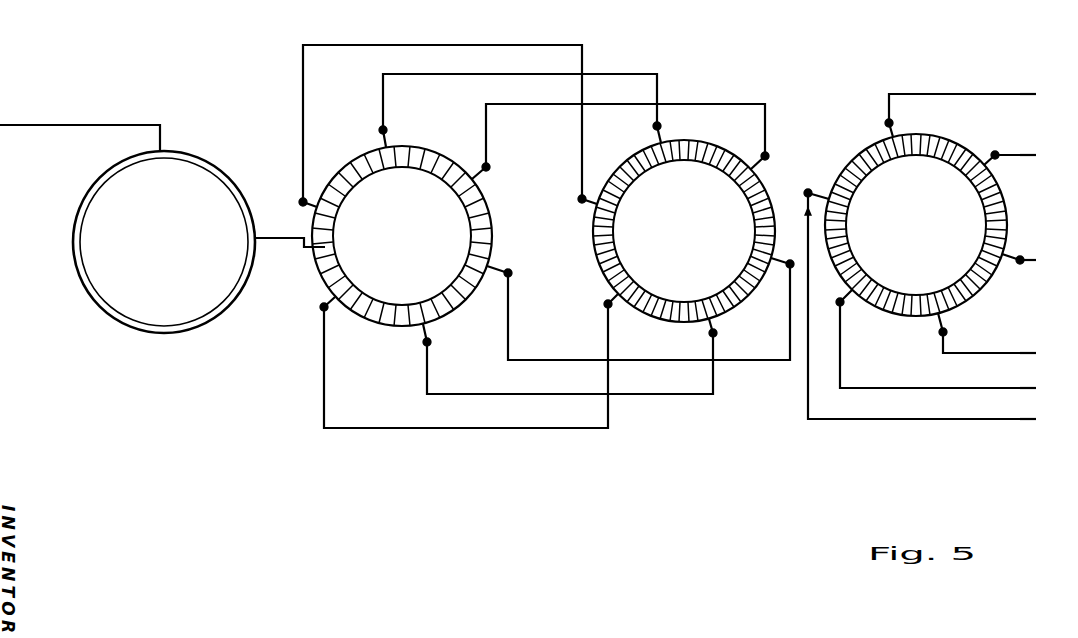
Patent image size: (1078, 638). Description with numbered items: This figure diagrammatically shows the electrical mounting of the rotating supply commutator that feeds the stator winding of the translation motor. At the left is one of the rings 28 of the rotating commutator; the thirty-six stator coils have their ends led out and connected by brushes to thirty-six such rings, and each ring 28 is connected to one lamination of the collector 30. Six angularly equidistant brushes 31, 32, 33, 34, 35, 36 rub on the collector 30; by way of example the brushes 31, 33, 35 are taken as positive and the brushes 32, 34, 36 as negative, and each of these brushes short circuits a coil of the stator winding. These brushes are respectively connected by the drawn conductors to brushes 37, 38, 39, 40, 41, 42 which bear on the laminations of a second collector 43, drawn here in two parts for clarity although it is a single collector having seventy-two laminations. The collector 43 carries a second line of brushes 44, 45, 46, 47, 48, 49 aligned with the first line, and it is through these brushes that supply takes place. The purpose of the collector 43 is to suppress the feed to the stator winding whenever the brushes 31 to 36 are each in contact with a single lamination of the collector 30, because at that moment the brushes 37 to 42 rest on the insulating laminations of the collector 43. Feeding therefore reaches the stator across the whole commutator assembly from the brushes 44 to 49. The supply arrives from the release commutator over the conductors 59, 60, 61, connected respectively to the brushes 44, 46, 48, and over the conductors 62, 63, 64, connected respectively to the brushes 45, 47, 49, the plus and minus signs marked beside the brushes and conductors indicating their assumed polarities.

The ring 28 is at (193, 162).
The collector 30 is at (437, 163).
The brush 31 is at (511, 111).
The brush 32 is at (617, 149).
The brush 33 is at (638, 304).
The brush 34 is at (561, 359).
The brush 35 is at (460, 357).
The brush 36 is at (439, 134).
The brush 37 is at (656, 136).
The brush 38 is at (767, 167).
The brush 39 is at (785, 261).
The brush 40 is at (717, 326).
The brush 41 is at (616, 304).
The brush 42 is at (585, 206).
The second collector 43 is at (724, 160).
The brush 44 is at (960, 115).
The brush 45 is at (1005, 155).
The brush 46 is at (1015, 272).
The brush 47 is at (980, 331).
The brush 48 is at (936, 339).
The brush 49 is at (920, 296).
The conductor 59 is at (1040, 97).
The conductor 60 is at (1041, 265).
The conductor 61 is at (1041, 387).
The conductor 62 is at (1041, 158).
The conductor 63 is at (1041, 354).
The conductor 64 is at (1041, 420).